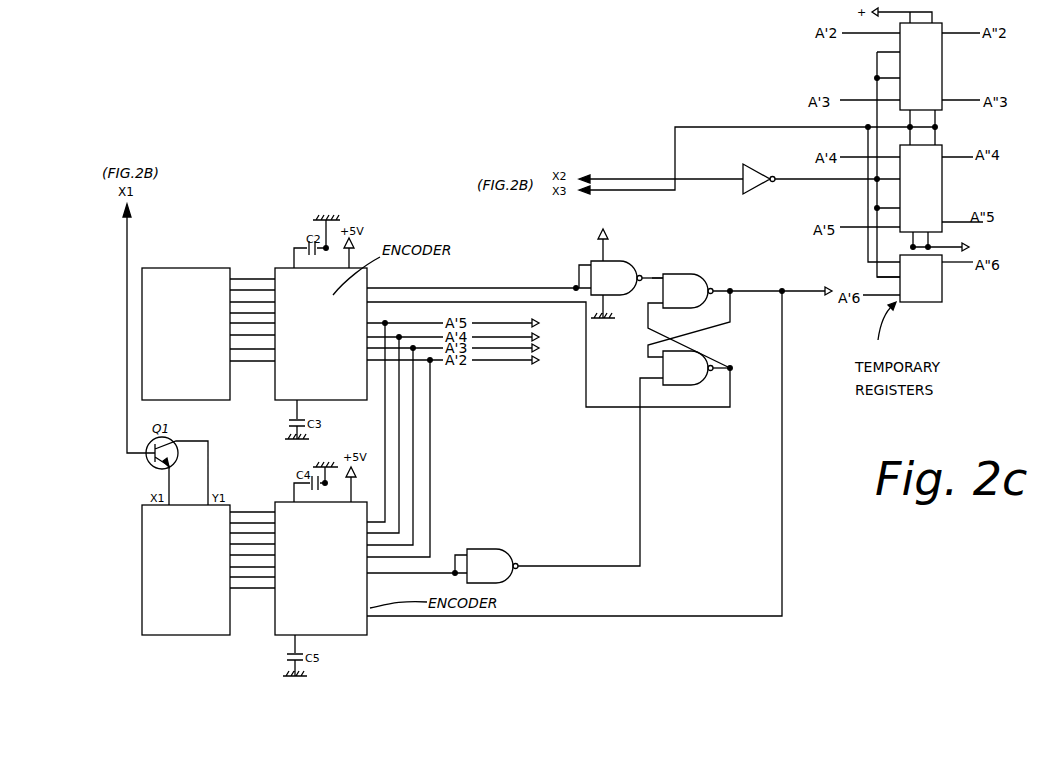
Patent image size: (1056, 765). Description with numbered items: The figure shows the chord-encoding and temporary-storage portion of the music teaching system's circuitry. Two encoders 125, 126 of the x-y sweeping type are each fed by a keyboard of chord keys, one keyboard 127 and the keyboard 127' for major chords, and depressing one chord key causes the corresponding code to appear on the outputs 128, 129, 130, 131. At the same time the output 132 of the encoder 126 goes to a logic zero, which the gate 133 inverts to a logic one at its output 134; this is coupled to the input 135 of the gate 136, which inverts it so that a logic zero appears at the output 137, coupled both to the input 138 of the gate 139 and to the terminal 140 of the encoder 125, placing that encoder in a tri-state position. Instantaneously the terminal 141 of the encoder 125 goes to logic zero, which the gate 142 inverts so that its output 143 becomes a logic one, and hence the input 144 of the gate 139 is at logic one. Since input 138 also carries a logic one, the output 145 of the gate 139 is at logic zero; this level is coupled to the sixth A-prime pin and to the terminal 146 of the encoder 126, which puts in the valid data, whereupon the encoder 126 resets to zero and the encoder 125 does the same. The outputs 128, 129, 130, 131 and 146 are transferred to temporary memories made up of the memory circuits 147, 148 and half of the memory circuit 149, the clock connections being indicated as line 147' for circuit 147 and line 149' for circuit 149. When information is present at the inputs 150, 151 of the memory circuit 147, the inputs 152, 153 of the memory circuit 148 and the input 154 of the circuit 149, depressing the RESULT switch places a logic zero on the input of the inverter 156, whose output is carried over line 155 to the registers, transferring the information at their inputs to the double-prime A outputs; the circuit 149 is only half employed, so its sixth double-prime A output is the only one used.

The encoder 125 is at (287, 378).
The encoder 126 is at (333, 622).
The keyboard 127 is at (186, 319).
The keyboard 127' is at (186, 587).
The output 128 is at (385, 427).
The output 129 is at (398, 440).
The output 130 is at (413, 470).
The output 131 is at (430, 507).
The output 132 is at (418, 575).
The gate 133 is at (485, 550).
The output 134 is at (532, 565).
The input 135 is at (643, 385).
The gate 136 is at (692, 385).
The output 137 is at (722, 372).
The input 138 is at (647, 315).
The gate 139 is at (697, 273).
The terminal 140 is at (438, 302).
The terminal 141 is at (402, 287).
The gate 142 is at (620, 266).
The output 143 is at (660, 277).
The input 144 is at (658, 279).
The output 145 is at (731, 290).
The terminal 146 is at (370, 620).
The memory circuit 147 is at (941, 68).
The clock input line 147' is at (860, 164).
The memory circuit 148 is at (877, 180).
The memory circuit 149 is at (944, 296).
The clock input line 149' is at (855, 269).
The input 150 is at (853, 33).
The input 151 is at (860, 103).
The input 152 is at (855, 157).
The input 153 is at (853, 210).
The input 154 is at (870, 297).
The connecting line 155 is at (707, 177).
The inverter 156 is at (759, 189).